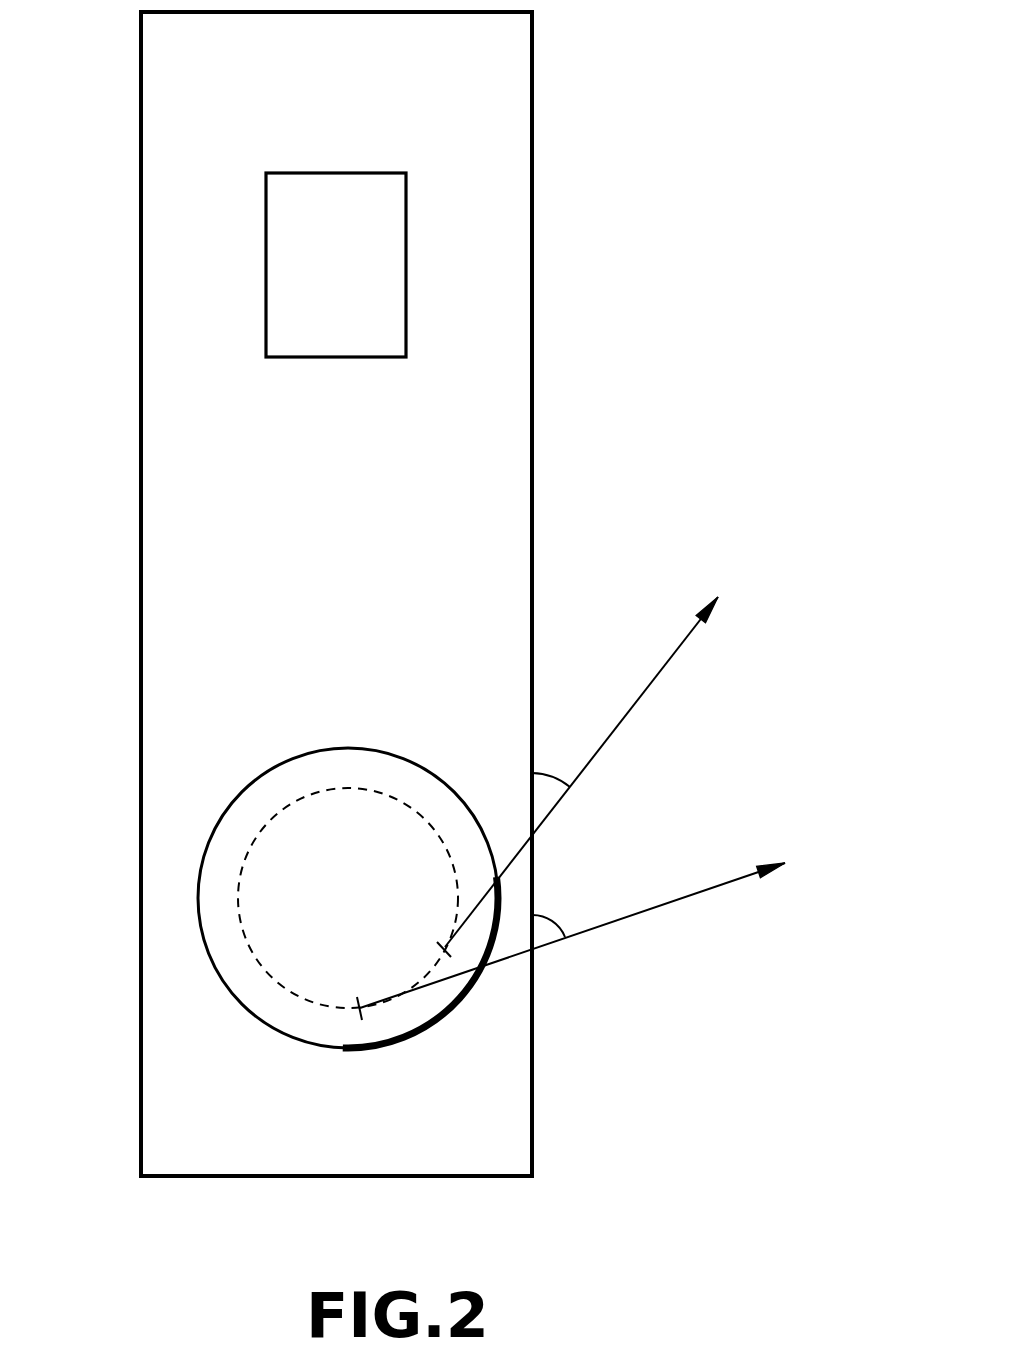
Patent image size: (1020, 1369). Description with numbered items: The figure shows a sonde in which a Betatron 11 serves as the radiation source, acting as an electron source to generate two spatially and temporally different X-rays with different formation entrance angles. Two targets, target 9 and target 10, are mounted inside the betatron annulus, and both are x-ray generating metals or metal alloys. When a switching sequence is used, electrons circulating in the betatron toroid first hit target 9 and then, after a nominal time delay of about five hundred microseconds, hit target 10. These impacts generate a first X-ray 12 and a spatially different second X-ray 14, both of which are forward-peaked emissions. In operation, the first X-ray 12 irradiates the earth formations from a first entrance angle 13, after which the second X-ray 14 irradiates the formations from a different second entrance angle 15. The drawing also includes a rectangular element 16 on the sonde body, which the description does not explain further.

The target 9 is at (361, 1006).
The target 10 is at (444, 946).
The Betatron 11 is at (202, 870).
The first X-ray 12 is at (718, 888).
The first entrance angle 13 is at (572, 910).
The second X-ray 14 is at (692, 635).
The second entrance angle 15 is at (553, 775).
The rectangular window 16 is at (468, 252).